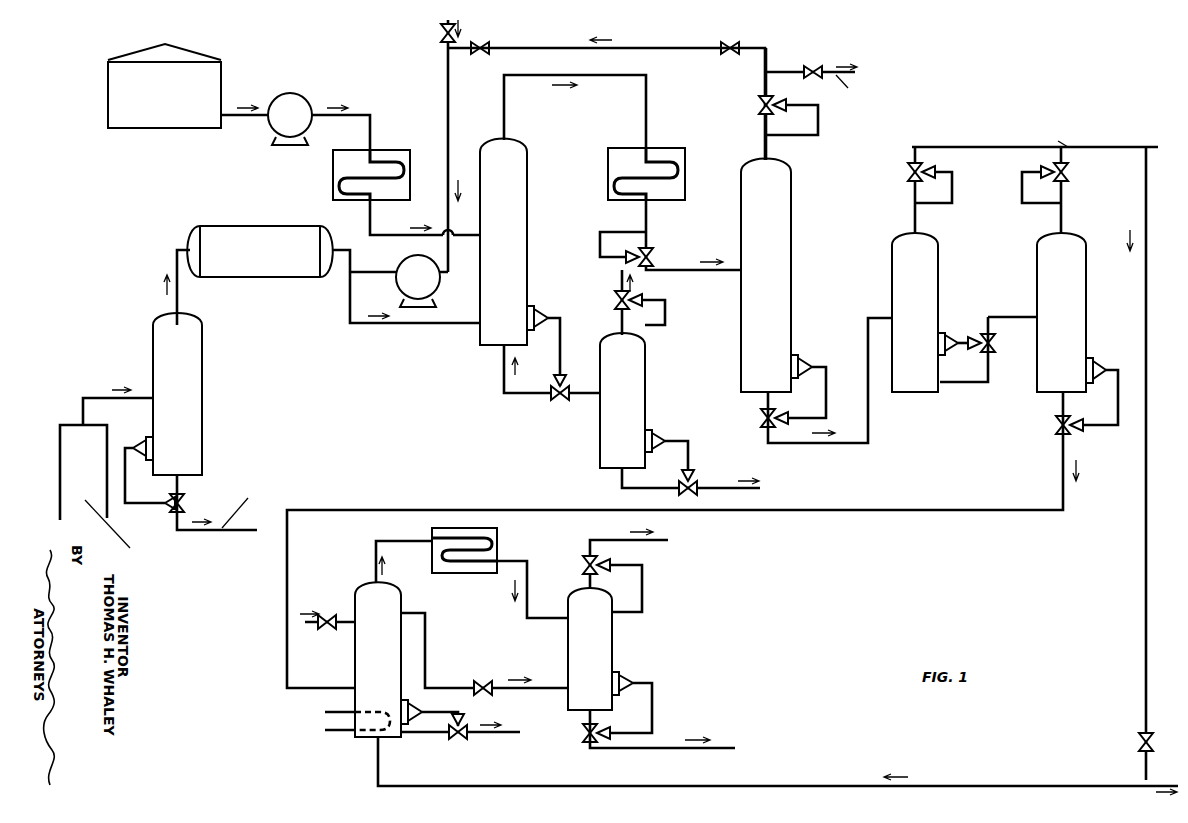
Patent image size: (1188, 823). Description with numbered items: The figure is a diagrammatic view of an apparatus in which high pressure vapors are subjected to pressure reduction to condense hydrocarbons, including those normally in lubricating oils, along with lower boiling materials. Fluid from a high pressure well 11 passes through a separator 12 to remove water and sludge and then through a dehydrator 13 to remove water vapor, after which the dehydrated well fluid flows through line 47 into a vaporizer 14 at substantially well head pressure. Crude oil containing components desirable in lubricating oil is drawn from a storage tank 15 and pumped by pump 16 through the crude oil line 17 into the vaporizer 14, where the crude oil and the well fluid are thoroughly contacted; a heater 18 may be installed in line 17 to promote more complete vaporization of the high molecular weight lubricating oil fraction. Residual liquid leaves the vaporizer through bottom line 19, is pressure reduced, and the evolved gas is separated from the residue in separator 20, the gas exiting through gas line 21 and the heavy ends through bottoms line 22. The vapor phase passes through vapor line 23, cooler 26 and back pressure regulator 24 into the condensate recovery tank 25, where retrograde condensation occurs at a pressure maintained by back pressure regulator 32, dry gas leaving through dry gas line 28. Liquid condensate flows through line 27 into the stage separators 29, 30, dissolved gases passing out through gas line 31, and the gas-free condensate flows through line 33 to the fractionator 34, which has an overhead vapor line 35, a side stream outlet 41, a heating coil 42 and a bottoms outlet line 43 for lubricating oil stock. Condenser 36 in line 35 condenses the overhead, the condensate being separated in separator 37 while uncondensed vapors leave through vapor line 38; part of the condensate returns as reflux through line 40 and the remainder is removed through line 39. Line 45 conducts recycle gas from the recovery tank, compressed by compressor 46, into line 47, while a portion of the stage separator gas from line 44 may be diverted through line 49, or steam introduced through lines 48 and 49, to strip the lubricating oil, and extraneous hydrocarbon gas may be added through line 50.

The high pressure well 11 is at (72, 468).
The separator 12 is at (170, 362).
The dehydrator 13 is at (258, 237).
The vaporizer 14 is at (493, 178).
The storage tank 15 is at (118, 106).
The pump 16 is at (287, 100).
The crude oil line 17 is at (374, 221).
The heater 18 is at (345, 159).
The bottom line 19 is at (503, 369).
The separator 20 is at (630, 374).
The gas line 21 is at (616, 298).
The bottoms line 22 is at (735, 486).
The vapor line 23 is at (610, 78).
The back pressure regulator 24 is at (656, 259).
The condensate recovery tank 25 is at (757, 221).
The cooler 26 is at (622, 164).
The line 27 is at (802, 445).
The dry gas line 28 is at (760, 84).
The stage separator 29 is at (922, 381).
The stage separator 30 is at (1053, 379).
The gas line 31 is at (1092, 146).
The back pressure regulator 32 is at (782, 104).
The line 33 is at (1060, 447).
The fractionator 34 is at (358, 615).
The overhead vapor line 35 is at (375, 544).
The condenser 36 is at (460, 569).
The separator 37 is at (600, 654).
The vapor line 38 is at (645, 546).
The line 39 is at (673, 750).
The line 40 is at (428, 658).
The side stream outlet 41 is at (325, 629).
The heating coil 42 is at (335, 732).
The bottoms outlet line 43 is at (510, 730).
The line 44 is at (1142, 300).
The line 45 is at (446, 108).
The compressor 46 is at (432, 281).
The high pressure well fluid line 47 is at (408, 326).
The line 48 is at (1160, 778).
The line 49 is at (785, 783).
The line 50 is at (440, 26).